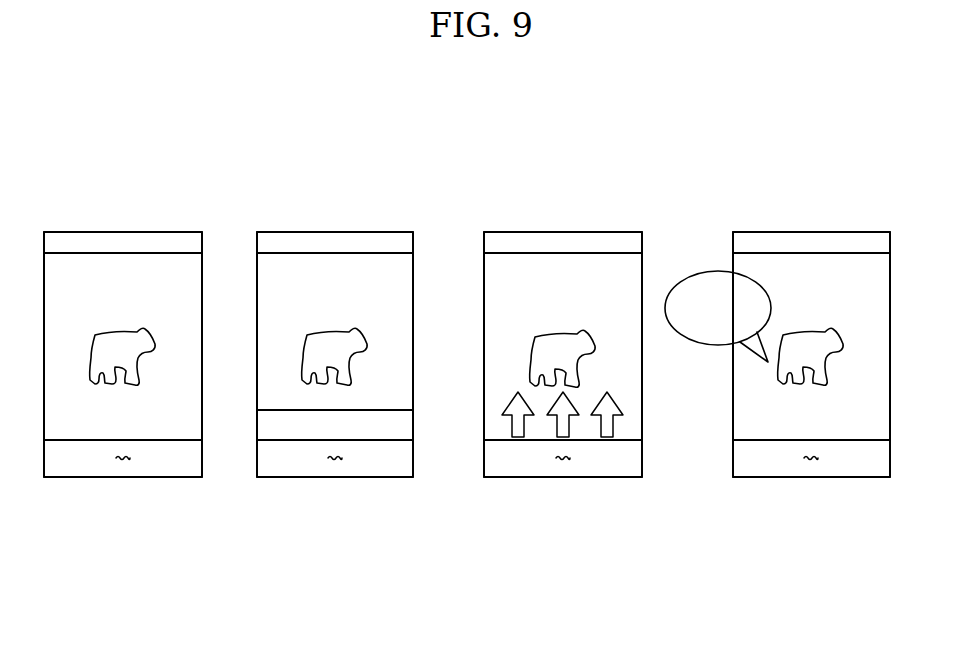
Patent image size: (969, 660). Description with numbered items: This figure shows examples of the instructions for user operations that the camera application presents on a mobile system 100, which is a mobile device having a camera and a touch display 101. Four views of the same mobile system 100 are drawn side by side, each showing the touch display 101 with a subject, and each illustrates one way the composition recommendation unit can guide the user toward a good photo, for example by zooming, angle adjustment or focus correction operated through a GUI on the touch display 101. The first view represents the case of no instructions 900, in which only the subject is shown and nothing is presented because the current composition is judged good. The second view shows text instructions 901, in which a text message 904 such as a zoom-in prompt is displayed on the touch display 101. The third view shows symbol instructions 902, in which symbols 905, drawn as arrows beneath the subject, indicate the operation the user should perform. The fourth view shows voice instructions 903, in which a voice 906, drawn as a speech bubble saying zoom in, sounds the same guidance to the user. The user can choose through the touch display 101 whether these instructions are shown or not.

The mobile system 100 is at (743, 232).
The touch display 101 is at (807, 252).
The no instructions 900 is at (75, 232).
The text instructions 901 is at (383, 232).
The symbol instructions 902 is at (532, 232).
The voice instructions 903 is at (859, 232).
The text message 904 is at (257, 430).
The symbols 905 is at (512, 422).
The voice 906 is at (708, 345).